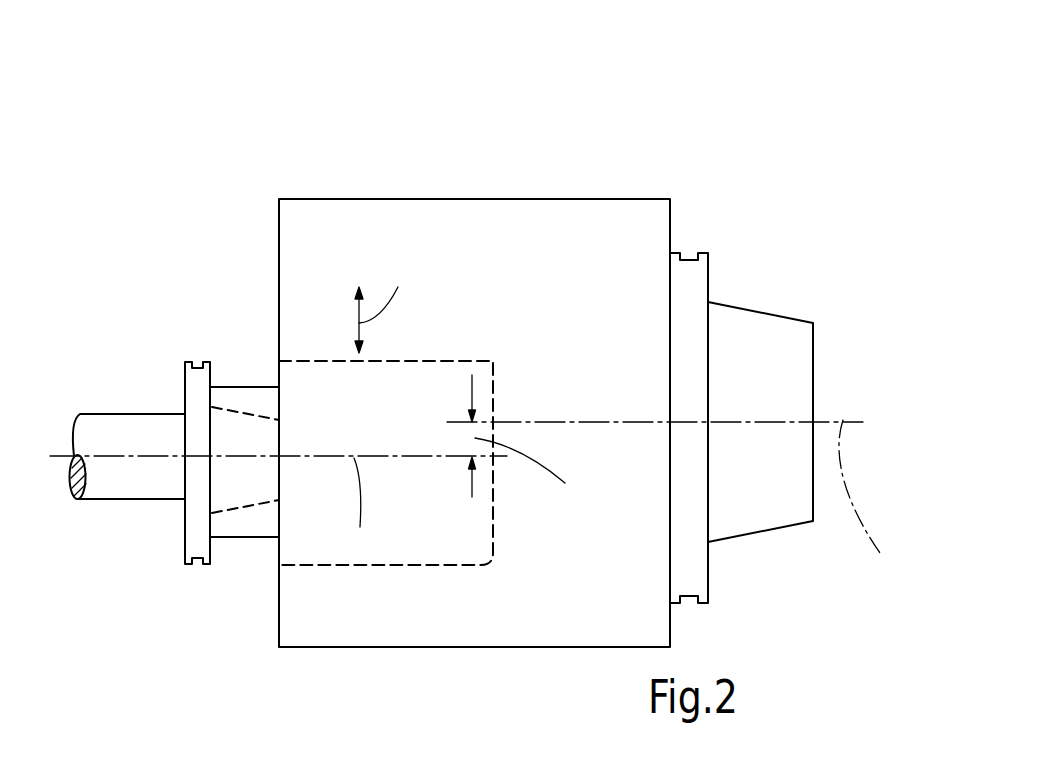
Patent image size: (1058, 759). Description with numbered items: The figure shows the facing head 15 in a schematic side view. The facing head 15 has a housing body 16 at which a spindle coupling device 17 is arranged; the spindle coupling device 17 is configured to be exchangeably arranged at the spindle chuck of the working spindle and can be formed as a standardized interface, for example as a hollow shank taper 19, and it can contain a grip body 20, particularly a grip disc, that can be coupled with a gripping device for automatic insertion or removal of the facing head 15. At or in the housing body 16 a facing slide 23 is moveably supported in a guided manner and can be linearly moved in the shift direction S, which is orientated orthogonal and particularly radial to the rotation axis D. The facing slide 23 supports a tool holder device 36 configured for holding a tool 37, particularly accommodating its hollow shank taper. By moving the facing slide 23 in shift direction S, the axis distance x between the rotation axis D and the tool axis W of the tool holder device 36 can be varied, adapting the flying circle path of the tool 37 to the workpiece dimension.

The facing head 15 is at (458, 183).
The housing body 16 is at (347, 197).
The spindle coupling device 17 is at (760, 205).
The hollow shank taper 19 is at (740, 338).
The grip body 20 is at (690, 262).
The facing slide 23 is at (429, 358).
The tool holder device 36 is at (240, 387).
The tool 37 is at (130, 398).